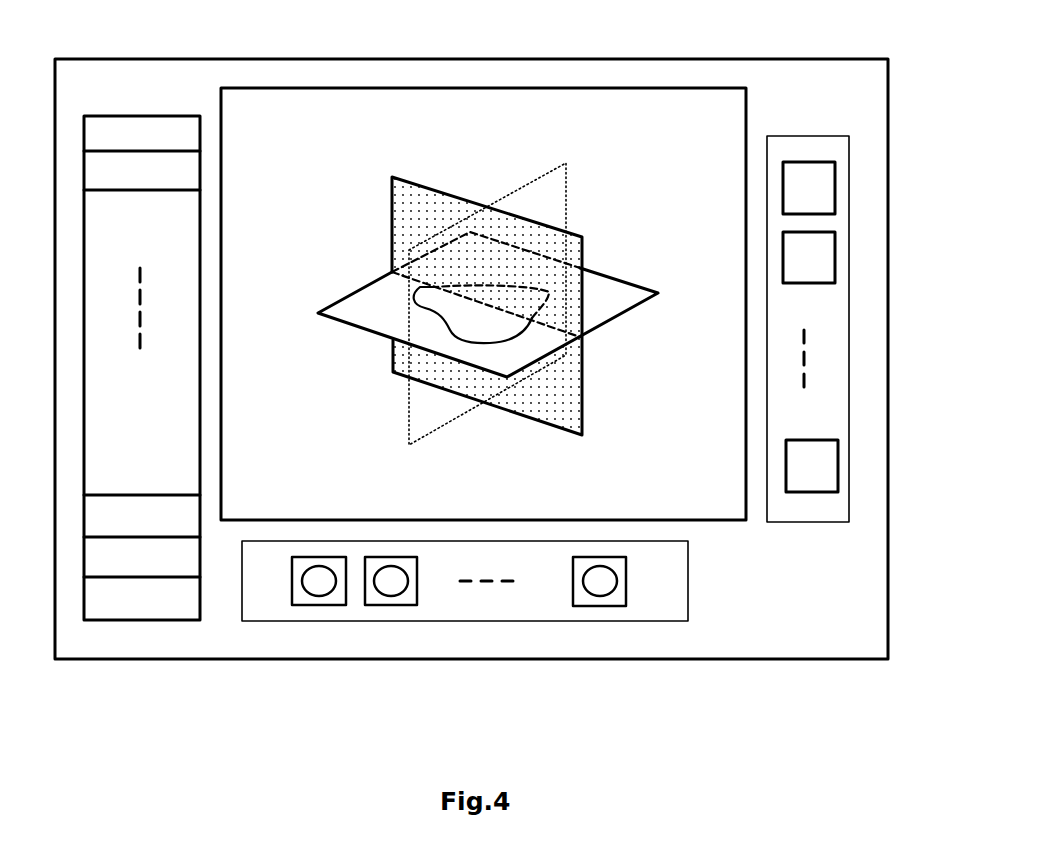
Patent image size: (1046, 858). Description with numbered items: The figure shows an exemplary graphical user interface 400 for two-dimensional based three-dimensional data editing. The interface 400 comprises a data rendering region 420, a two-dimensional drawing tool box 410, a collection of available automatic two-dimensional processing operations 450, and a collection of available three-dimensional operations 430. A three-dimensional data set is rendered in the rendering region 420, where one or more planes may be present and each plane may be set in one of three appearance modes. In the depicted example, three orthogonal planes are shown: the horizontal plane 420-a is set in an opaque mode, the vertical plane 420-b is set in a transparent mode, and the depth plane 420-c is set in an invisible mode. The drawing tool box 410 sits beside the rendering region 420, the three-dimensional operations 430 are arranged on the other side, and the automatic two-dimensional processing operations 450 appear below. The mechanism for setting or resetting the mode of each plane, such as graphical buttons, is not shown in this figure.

The graphical user interface 400 is at (332, 58).
The 2D drawing tool box 410 is at (183, 117).
The data rendering region 420 is at (475, 88).
The horizontal plane 420-a is at (327, 320).
The vertical plane 420-b is at (418, 183).
The depth plane 420-c is at (567, 209).
The collection of available 3D operations 430 is at (851, 240).
The collection of available automatic 2D processing operations 450 is at (407, 622).